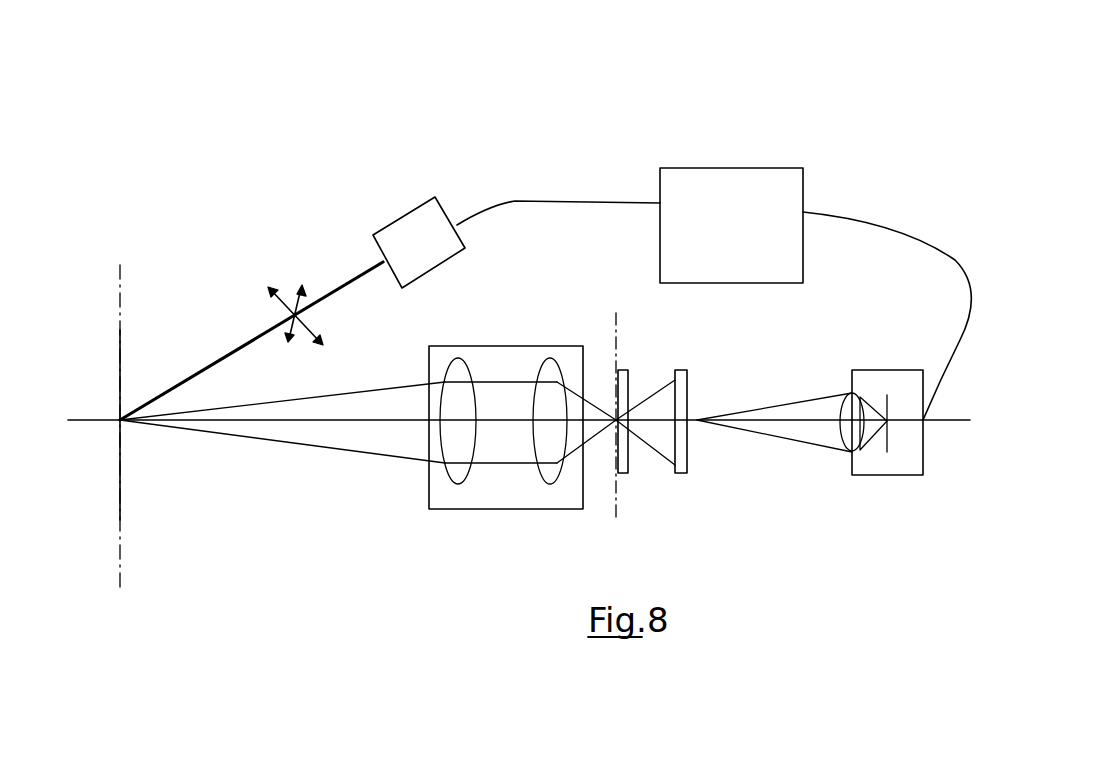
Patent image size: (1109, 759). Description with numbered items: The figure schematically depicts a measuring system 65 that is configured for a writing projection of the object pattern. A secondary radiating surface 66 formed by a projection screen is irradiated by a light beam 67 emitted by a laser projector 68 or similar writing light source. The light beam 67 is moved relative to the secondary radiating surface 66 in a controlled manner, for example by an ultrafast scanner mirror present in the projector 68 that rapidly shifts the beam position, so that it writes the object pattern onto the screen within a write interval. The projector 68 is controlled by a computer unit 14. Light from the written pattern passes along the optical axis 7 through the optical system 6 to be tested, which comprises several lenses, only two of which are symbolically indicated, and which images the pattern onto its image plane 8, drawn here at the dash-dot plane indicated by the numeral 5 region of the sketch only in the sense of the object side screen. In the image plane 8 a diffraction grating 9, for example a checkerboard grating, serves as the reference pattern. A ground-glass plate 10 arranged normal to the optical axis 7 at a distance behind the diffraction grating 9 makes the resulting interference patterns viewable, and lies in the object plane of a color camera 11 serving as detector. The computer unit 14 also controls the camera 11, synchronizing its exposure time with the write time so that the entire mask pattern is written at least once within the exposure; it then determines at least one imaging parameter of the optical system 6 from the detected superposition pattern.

The object surface / measuring plane 5 is at (121, 537).
The optical system to be tested 6 is at (506, 500).
The optical axis 7 is at (955, 422).
The image plane 8 is at (614, 315).
The diffraction grating 9 is at (626, 475).
The ground-glass plate 10 is at (683, 477).
The color camera 11 is at (898, 487).
The computer unit 14 is at (733, 180).
The measuring system 65 is at (292, 128).
The secondary radiating surface 66 is at (118, 358).
The light beam 67 is at (216, 358).
The laser projector 68 is at (407, 222).